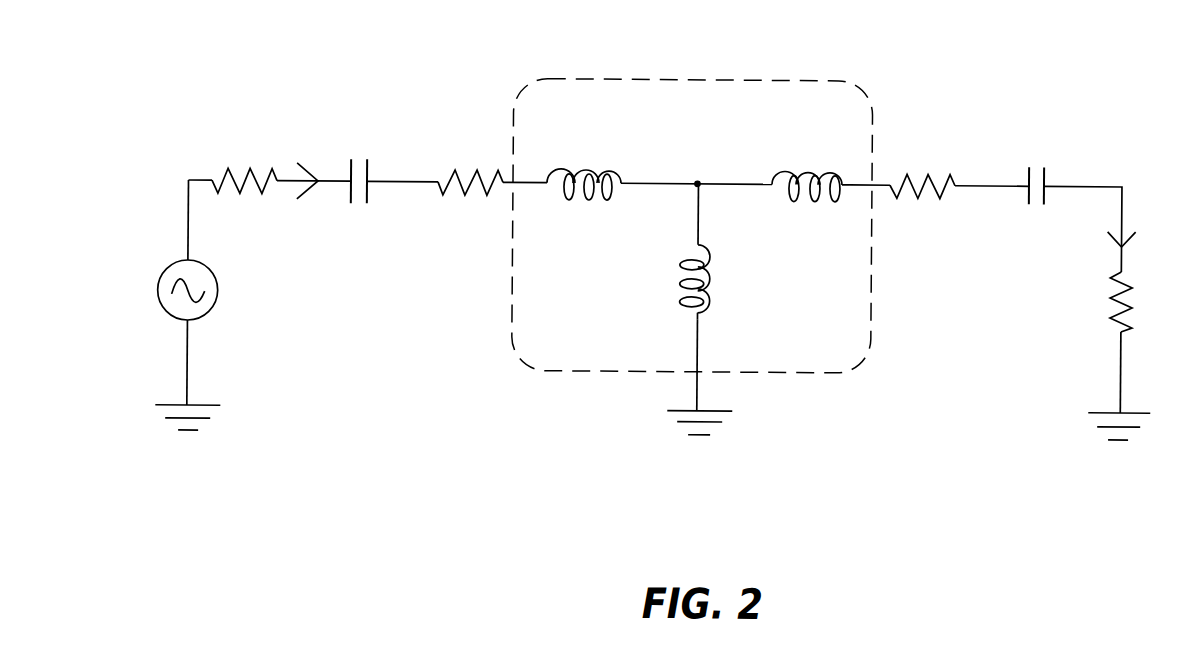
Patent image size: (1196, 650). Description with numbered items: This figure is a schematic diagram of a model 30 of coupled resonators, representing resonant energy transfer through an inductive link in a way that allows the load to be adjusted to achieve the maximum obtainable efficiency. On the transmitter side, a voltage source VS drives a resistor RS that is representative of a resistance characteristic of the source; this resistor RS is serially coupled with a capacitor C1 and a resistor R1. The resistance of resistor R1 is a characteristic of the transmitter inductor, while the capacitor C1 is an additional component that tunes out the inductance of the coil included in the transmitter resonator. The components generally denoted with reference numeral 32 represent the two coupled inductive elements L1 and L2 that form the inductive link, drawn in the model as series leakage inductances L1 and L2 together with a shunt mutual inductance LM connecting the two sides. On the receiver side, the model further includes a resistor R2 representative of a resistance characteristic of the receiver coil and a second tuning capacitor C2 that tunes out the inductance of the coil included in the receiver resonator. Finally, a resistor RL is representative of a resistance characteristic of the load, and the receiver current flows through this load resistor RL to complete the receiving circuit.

The equivalent circuit 30 is at (1046, 66).
The coupled inductive elements 32 is at (572, 336).
The source voltage VS is at (205, 305).
The source resistance resistor RS is at (245, 158).
The tuning capacitor C1 is at (355, 163).
The transmitter coil resistance resistor R1 is at (471, 161).
The first inductor L1 is at (577, 164).
The second inductor L2 is at (808, 165).
The mutual inductance LM is at (712, 308).
The receiver coil resistance resistor R2 is at (923, 165).
The second tuning capacitor C2 is at (1039, 167).
The load resistance resistor RL is at (1129, 356).